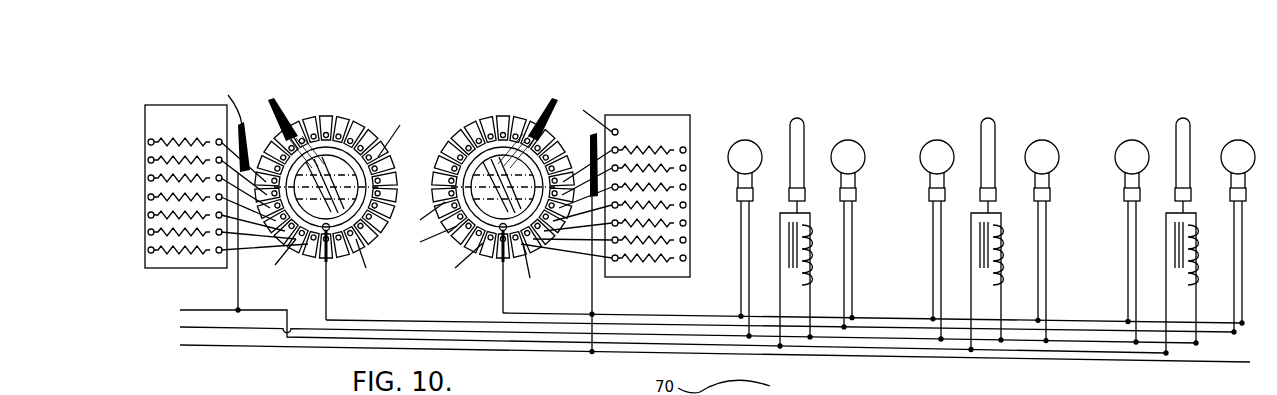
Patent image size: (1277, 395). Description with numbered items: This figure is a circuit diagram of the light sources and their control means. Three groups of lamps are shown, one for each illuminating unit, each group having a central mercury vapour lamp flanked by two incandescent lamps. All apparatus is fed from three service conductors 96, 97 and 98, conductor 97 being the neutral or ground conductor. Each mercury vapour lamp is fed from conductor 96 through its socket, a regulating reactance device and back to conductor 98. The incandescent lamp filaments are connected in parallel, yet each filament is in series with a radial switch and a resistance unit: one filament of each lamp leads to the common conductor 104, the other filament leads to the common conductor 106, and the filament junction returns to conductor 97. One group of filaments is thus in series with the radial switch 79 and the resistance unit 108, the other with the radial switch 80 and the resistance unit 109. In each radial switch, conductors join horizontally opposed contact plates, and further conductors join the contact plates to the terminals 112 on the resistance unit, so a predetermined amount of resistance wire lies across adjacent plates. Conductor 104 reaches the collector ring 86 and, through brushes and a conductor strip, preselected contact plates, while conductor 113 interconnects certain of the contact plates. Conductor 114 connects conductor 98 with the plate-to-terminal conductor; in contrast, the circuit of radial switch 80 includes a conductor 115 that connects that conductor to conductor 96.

The radial switch 79 is at (522, 118).
The radial switch 80 is at (345, 118).
The collector ring 86 is at (362, 125).
The service conductor 96 is at (660, 327).
The service conductor 97 is at (676, 331).
The service conductor 98 is at (702, 349).
The common conductor 104 is at (655, 311).
The common conductor 106 is at (425, 311).
The resistance unit 108 is at (605, 186).
The resistance unit 109 is at (170, 112).
The terminal 112 is at (417, 105).
The conductor 113 is at (330, 262).
The conductor 114 is at (592, 296).
The conductor 115 is at (238, 287).